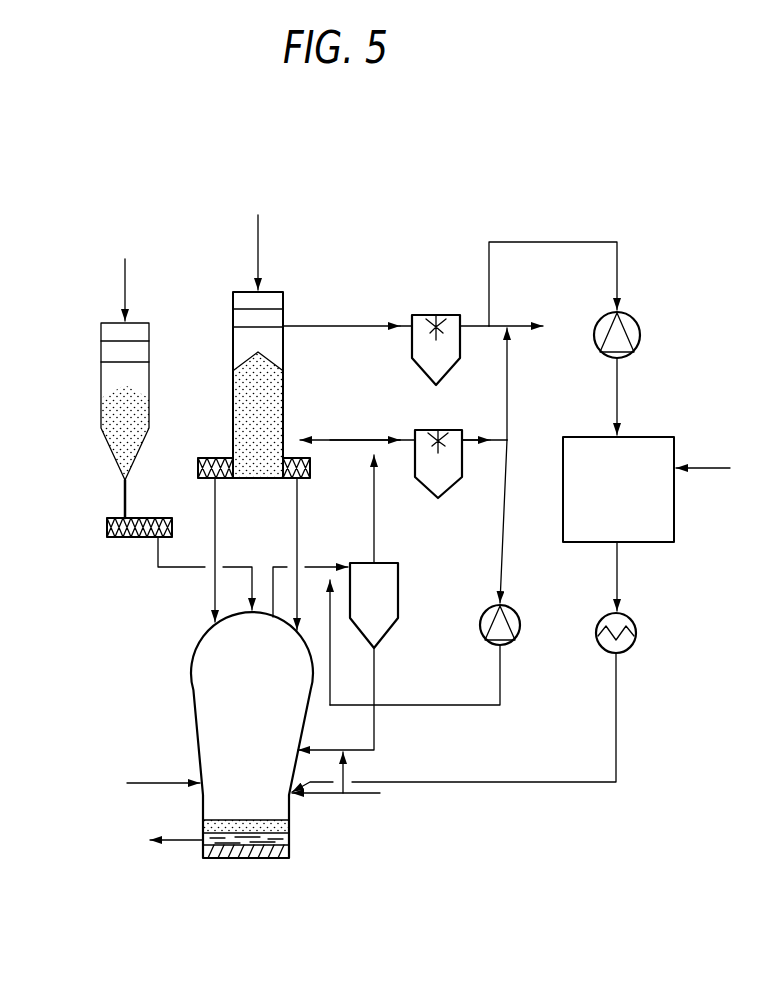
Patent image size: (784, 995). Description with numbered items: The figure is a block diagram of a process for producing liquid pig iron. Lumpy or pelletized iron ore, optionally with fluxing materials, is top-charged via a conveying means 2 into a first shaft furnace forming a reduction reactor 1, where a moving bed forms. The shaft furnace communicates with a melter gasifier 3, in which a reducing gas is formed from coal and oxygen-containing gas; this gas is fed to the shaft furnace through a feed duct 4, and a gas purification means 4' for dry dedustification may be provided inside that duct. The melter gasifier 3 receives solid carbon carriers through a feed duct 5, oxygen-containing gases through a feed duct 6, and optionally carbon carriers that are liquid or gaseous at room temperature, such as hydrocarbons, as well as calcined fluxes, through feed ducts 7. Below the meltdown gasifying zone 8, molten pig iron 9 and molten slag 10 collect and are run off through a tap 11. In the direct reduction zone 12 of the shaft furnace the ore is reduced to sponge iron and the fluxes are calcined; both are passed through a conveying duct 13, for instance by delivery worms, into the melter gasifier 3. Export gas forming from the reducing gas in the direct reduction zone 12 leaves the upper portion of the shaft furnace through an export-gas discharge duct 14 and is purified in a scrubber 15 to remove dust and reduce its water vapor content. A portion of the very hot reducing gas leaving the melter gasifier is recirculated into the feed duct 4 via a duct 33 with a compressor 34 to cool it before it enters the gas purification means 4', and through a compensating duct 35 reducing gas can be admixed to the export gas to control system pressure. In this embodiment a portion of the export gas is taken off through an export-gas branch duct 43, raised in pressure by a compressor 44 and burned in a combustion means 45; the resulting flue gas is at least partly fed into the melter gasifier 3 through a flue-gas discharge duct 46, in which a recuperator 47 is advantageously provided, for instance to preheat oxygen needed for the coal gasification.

The reduction reactor 1 is at (290, 289).
The conveying means 2 is at (262, 248).
The melter gasifier 3 is at (191, 677).
The feed duct 4 is at (403, 498).
The gas purification means 4' is at (357, 656).
The feed duct for solid carbon carriers 5 is at (187, 570).
The feed duct for oxygen-containing gases 6 is at (355, 797).
The feed ducts for liquid or gaseous carbon carriers and calcined fluxes 7 is at (181, 782).
The meltdown gasifying zone 8 is at (260, 757).
The molten pig iron 9 is at (270, 840).
The molten slag 10 is at (202, 828).
The tap 11 is at (182, 840).
The direct reduction zone 12 is at (247, 397).
The conveying duct 13 is at (297, 512).
The export-gas discharge duct 14 is at (485, 326).
The scrubber 15 is at (433, 315).
The duct 33 is at (504, 553).
The compressor 34 is at (512, 605).
The compensating duct 35 is at (507, 397).
The export-gas branch duct 43 is at (598, 242).
The compressor 44 is at (633, 312).
The combustion means 45 is at (650, 448).
The flue-gas discharge duct 46 is at (616, 708).
The recuperator 47 is at (621, 615).